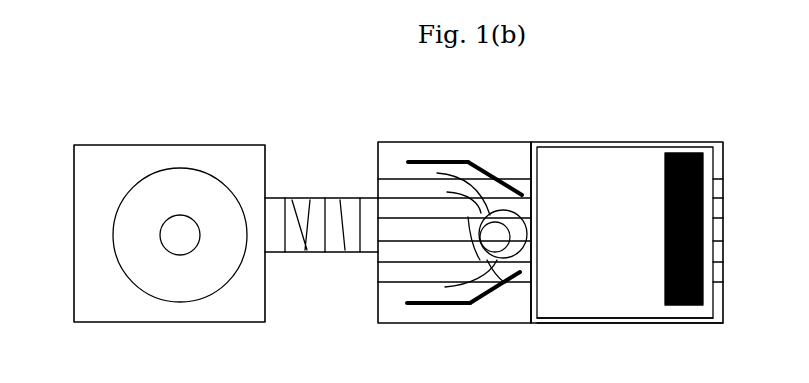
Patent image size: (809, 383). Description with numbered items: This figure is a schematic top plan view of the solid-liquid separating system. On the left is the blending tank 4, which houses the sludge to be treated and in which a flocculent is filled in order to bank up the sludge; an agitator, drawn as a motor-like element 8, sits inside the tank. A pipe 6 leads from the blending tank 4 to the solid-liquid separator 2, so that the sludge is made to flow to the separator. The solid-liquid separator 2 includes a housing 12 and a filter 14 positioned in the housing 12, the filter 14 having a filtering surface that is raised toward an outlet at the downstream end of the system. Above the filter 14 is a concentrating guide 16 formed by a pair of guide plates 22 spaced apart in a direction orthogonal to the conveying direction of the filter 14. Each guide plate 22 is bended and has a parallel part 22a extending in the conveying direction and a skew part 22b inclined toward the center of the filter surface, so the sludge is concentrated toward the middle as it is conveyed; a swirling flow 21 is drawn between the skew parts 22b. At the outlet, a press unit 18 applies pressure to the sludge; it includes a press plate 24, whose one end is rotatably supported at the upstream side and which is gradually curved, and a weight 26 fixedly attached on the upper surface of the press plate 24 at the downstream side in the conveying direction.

The solid-liquid separator 2 is at (618, 143).
The blending tank 4 is at (230, 165).
The pipe 6 is at (332, 220).
The motor 8 is at (180, 215).
The housing 12 is at (577, 324).
The filter 14 is at (396, 168).
The concentrating guide 16 is at (465, 162).
The press unit 18 is at (635, 170).
The vortex 21 is at (467, 222).
The guide plate 22 is at (474, 223).
The parallel part 22a is at (430, 160).
The skew part 22b is at (483, 187).
The press plate 24 is at (645, 311).
The weight 26 is at (702, 180).